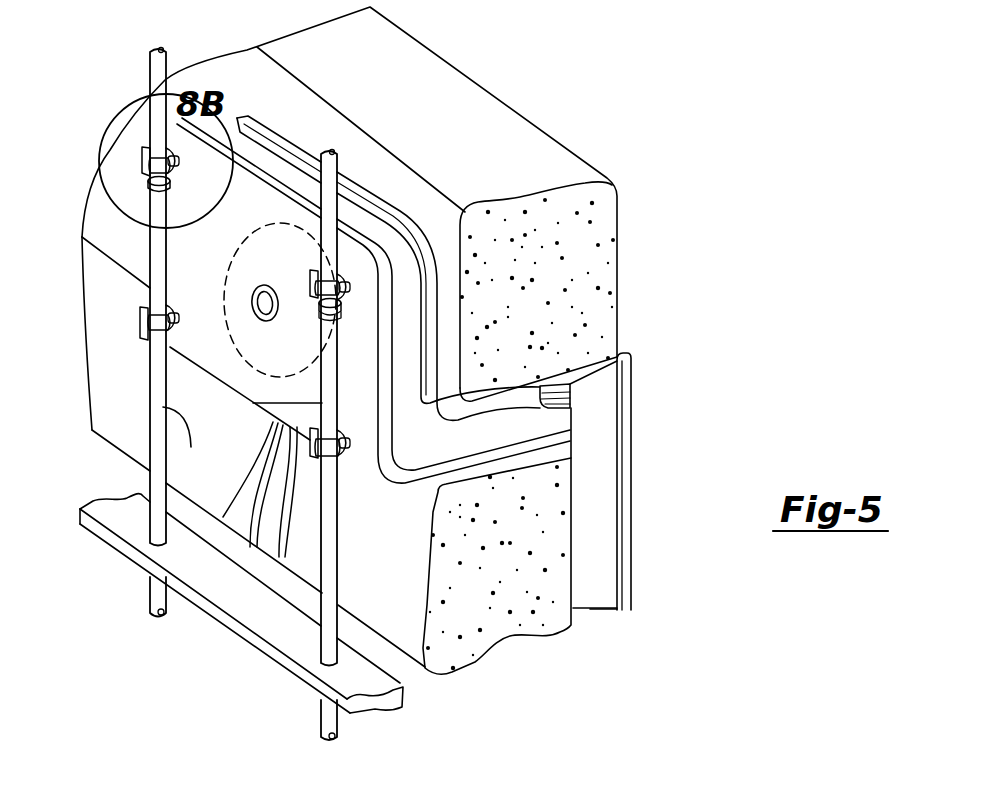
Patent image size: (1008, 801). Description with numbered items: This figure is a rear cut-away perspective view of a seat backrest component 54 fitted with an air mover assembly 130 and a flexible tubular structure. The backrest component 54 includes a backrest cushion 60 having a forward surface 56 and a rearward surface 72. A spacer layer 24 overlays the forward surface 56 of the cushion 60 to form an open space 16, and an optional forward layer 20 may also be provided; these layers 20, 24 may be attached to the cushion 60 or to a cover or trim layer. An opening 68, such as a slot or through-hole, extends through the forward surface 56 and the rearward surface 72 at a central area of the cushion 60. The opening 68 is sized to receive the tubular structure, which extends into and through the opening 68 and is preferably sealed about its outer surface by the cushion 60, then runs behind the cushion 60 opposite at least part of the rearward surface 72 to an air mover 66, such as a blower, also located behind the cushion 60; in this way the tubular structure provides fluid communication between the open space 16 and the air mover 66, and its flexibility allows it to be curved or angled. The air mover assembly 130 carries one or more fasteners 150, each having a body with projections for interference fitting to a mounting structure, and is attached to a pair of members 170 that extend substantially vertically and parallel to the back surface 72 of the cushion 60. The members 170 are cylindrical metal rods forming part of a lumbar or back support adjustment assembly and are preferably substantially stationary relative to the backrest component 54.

The open space 16 is at (603, 418).
The forward layer 20 is at (633, 463).
The spacer layer 24 is at (593, 611).
The seat backrest component 54 is at (585, 142).
The forward surface 56 is at (571, 528).
The backrest cushion 60 is at (525, 627).
The air mover 66 is at (188, 257).
The opening 68 is at (572, 386).
The rearward surface 72 is at (388, 566).
The air mover assembly 130 is at (188, 373).
The fastener 150 is at (378, 262).
The member 170 is at (253, 403).